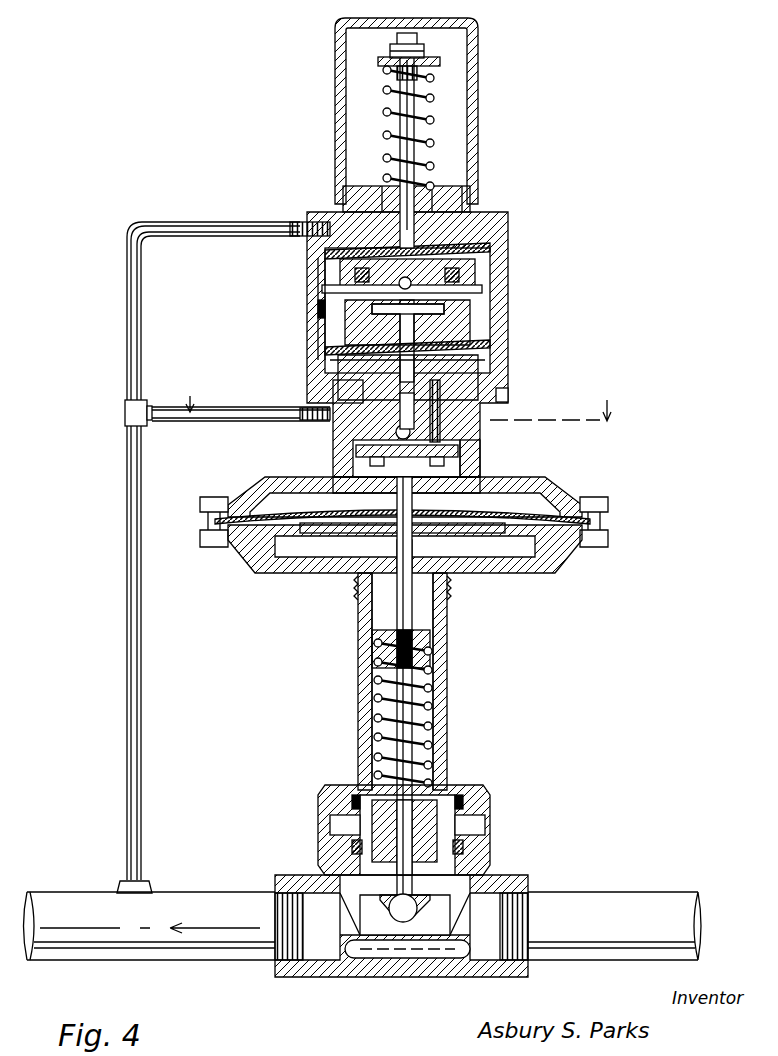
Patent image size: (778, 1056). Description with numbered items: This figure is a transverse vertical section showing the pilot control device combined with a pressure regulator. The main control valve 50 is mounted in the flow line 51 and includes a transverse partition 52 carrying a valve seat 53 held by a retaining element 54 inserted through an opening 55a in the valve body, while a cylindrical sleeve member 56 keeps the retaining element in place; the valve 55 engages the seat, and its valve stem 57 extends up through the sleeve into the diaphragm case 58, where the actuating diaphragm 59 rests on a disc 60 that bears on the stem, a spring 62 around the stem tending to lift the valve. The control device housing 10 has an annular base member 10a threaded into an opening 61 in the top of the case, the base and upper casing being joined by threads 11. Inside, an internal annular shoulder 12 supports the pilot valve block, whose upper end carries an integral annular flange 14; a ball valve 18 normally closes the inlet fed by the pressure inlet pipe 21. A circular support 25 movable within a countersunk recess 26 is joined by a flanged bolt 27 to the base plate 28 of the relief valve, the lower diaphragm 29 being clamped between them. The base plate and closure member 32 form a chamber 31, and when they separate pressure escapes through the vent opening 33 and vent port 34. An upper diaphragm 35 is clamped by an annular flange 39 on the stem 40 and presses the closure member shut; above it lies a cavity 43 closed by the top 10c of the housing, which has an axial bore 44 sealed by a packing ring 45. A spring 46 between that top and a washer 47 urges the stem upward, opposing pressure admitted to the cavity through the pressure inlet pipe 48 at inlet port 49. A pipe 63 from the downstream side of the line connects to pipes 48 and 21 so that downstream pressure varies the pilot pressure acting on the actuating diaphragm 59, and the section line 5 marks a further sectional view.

The section line 5- 5 is at (399, 399).
The housing 10 is at (497, 262).
The annular base member 10a is at (335, 450).
The top of the housing 10c is at (355, 188).
The threads 11 is at (333, 392).
The internal annular shoulder 12 is at (472, 470).
The integral annular flange 14 is at (478, 373).
The ball valve 18 is at (407, 460).
The pressure inlet pipe 21 is at (172, 424).
The circular support 25 is at (328, 362).
The countersunk recess 26 is at (500, 396).
The flanged bolt 27 is at (326, 308).
The base plate 28 is at (470, 332).
The lower diaphragm 29 is at (482, 356).
The chamber 31 is at (450, 312).
The closure member 32 is at (332, 286).
The vent opening 33 is at (320, 330).
The vent port 34 is at (309, 322).
The upper diaphragm 35 is at (470, 252).
The annular flange 39 is at (455, 232).
The stem 40 is at (412, 130).
The cavity 43 is at (338, 206).
The axial bore 44 is at (455, 192).
The packing ring 45 is at (477, 200).
The spring 46 is at (437, 96).
The washer 47 is at (442, 62).
The pressure inlet pipe 48 is at (196, 224).
The inlet port 49 is at (322, 222).
The main control valve 50 is at (497, 877).
The flow line 51 is at (197, 902).
The transverse partition 52 is at (370, 958).
The valve seat 53 is at (420, 930).
The retaining element 54 is at (458, 865).
The valve 55 is at (403, 924).
The opening in the valve body 55a is at (355, 848).
The cylindrical sleeve member 56 is at (446, 722).
The valve stem 57 is at (412, 700).
The diaphragm case 58 is at (315, 570).
The actuating diaphragm 59 is at (560, 492).
The disc 60 is at (360, 530).
The opening 61 is at (338, 478).
The spring 62 is at (440, 707).
The pipe 63 is at (144, 616).